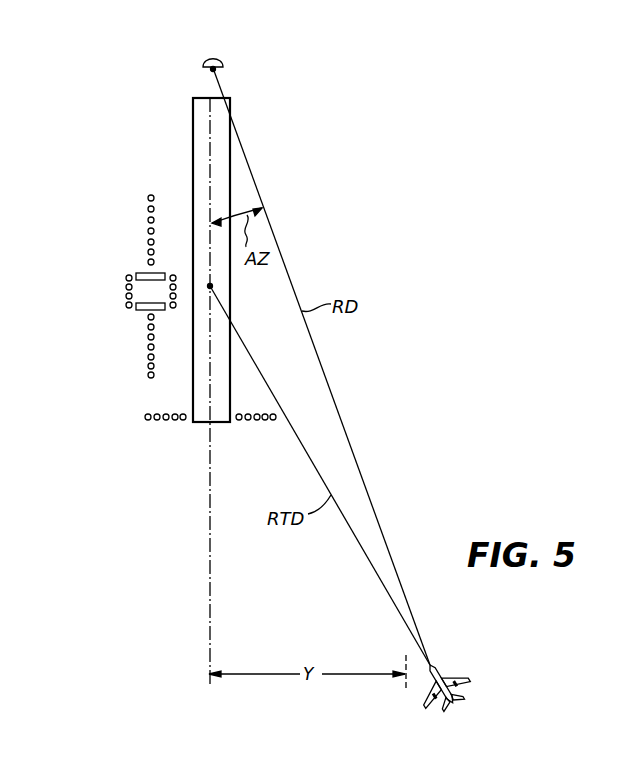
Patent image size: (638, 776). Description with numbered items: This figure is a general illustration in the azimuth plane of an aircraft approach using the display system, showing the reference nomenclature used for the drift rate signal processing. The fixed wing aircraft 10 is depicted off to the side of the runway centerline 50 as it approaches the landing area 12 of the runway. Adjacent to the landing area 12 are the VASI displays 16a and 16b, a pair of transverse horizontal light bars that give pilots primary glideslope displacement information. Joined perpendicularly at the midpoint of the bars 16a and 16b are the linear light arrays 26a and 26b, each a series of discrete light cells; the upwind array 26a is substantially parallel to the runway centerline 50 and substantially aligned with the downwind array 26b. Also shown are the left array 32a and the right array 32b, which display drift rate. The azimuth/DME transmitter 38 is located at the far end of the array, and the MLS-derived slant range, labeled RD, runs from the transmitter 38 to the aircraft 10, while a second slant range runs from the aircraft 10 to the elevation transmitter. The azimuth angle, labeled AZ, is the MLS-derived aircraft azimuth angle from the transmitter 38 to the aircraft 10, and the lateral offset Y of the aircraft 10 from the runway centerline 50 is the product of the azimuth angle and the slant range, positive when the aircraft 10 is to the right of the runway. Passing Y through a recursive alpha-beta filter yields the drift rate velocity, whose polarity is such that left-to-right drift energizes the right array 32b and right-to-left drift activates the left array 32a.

The fixed wing aircraft 10 is at (465, 687).
The landing area 12 is at (213, 287).
The VASI display 16a is at (137, 274).
The VASI display 16b is at (137, 311).
The linear light array 26a is at (148, 198).
The linear light array 26b is at (149, 374).
The left array 32a is at (156, 420).
The right array 32b is at (250, 420).
The azimuth/DME transmitter 38 is at (204, 63).
The runway centerline 50 is at (200, 424).